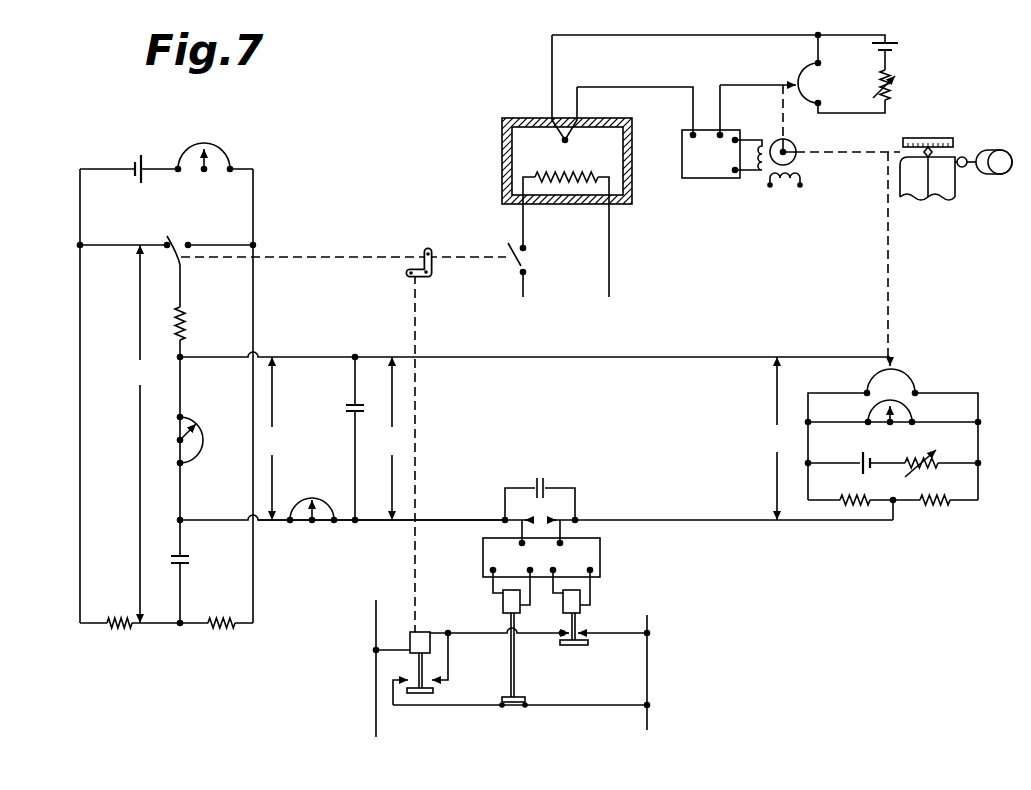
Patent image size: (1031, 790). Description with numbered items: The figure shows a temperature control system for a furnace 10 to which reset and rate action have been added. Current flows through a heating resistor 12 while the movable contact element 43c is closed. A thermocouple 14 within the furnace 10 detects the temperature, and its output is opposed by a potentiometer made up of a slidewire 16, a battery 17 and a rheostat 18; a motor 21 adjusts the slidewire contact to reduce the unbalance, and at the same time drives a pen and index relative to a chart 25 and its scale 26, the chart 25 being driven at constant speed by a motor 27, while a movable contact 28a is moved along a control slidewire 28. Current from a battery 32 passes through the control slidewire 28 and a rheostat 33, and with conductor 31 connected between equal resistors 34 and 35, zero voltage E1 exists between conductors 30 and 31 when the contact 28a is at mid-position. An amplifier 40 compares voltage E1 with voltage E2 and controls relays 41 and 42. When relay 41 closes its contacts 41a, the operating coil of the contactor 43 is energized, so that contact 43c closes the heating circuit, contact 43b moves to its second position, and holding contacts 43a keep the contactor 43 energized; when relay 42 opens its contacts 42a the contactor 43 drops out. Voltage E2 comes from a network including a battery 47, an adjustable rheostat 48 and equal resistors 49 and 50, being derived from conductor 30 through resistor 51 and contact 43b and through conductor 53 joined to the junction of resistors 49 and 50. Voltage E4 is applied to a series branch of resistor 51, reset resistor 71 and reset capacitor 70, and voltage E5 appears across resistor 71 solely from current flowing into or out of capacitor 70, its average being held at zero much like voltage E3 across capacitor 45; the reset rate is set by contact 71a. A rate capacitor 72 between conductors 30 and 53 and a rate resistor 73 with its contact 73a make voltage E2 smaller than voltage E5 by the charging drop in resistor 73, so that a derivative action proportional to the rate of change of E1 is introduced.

The furnace 10 is at (503, 157).
The heating resistor 12 is at (571, 176).
The thermocouple 14 is at (562, 139).
The slidewire 16 is at (803, 68).
The battery 17 is at (897, 42).
The rheostat 18 is at (893, 99).
The motor 21 is at (795, 143).
The chart 25 is at (940, 190).
The scale 26 is at (926, 138).
The motor 27 is at (988, 152).
The control slidewire 28 is at (916, 381).
The movable contact 28a is at (895, 355).
The conductor 30 is at (580, 360).
The conductor 31 is at (665, 518).
The battery 32 is at (862, 460).
The rheostat 33 is at (914, 453).
The resistor 34 is at (845, 494).
The resistor 35 is at (946, 504).
The amplifier 40 is at (597, 545).
The relay 41 is at (578, 598).
The contacts 41a is at (574, 647).
The relay 42 is at (503, 606).
The contacts 42a is at (517, 703).
The circuit maker and breaker 43 is at (421, 631).
The holding contacts 43a is at (434, 689).
The contact element 43b is at (175, 246).
The movable contact element 43c is at (518, 265).
The capacitor 45 is at (543, 476).
The battery 47 is at (137, 160).
The adjustable rheostat 48 is at (227, 155).
The resistor 49 is at (132, 627).
The resistor 50 is at (233, 627).
The resistor 51 is at (186, 331).
The conductor 53 is at (445, 520).
The reset capacitor 70 is at (197, 560).
The reset resistor 71 is at (188, 419).
The contact 71a is at (192, 427).
The rate capacitor 72 is at (345, 407).
The rate resistor 73 is at (320, 497).
The contact 73a is at (309, 509).
The voltage E1 is at (779, 438).
The voltage E2 is at (394, 438).
The voltage E3 is at (541, 527).
The voltage E4 is at (142, 434).
The voltage E5 is at (274, 438).